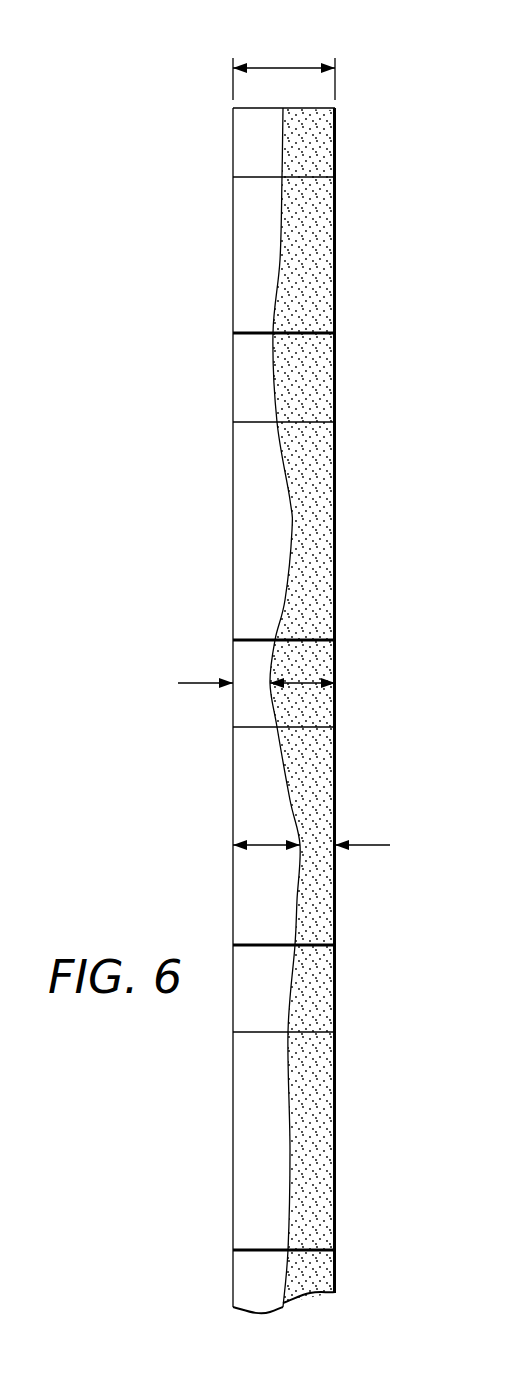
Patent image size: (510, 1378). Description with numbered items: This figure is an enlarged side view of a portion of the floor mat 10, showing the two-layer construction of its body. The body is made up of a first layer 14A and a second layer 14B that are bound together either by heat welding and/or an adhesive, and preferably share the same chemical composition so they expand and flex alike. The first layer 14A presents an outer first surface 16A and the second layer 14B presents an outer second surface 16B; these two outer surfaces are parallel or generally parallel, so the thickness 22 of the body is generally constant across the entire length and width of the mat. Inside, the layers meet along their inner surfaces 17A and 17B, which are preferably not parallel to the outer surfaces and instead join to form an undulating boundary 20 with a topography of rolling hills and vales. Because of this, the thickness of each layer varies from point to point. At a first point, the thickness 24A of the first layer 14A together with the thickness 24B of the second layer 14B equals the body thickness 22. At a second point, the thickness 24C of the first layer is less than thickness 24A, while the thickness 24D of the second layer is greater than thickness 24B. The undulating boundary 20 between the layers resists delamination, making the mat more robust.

The floor mat 10 is at (156, 580).
The thickness of the body 22 is at (285, 62).
The first layer 14A is at (325, 233).
The second layer 14B is at (241, 253).
The first surface 16A is at (337, 372).
The second surface 16B is at (232, 475).
The thickness of the first layer at a first point 24A is at (302, 682).
The thickness of the second layer at a first point 24B is at (250, 682).
The thickness of the first layer at a second point 24C is at (320, 843).
The thickness of the second layer at a second point 24D is at (268, 843).
The inner surface of the first layer 17A is at (290, 1102).
The inner surface of the second layer 17B is at (293, 1183).
The undulating boundary 20 is at (283, 1286).